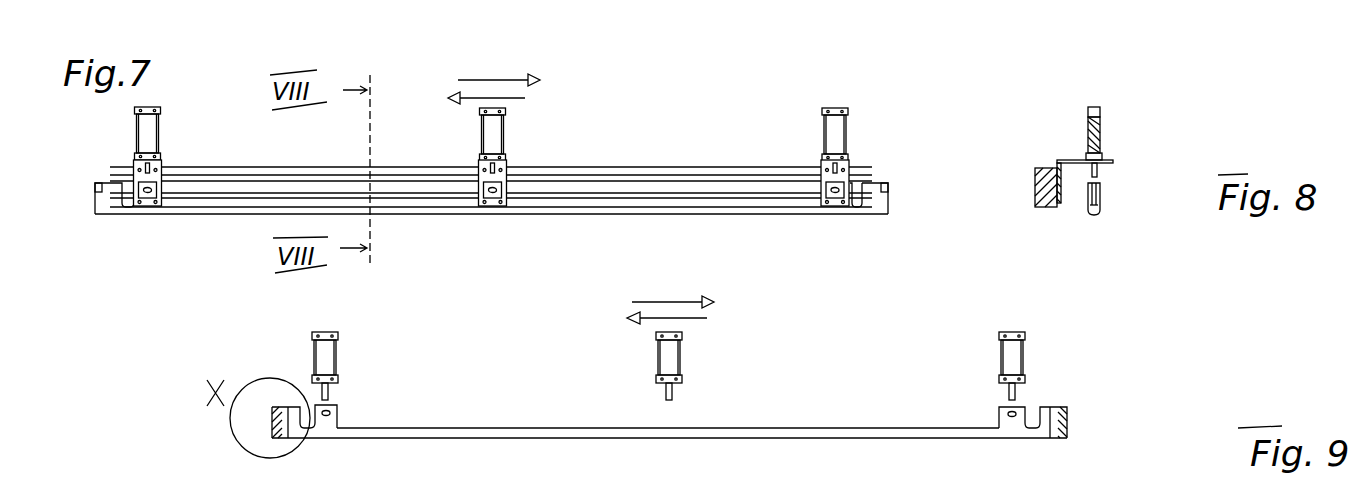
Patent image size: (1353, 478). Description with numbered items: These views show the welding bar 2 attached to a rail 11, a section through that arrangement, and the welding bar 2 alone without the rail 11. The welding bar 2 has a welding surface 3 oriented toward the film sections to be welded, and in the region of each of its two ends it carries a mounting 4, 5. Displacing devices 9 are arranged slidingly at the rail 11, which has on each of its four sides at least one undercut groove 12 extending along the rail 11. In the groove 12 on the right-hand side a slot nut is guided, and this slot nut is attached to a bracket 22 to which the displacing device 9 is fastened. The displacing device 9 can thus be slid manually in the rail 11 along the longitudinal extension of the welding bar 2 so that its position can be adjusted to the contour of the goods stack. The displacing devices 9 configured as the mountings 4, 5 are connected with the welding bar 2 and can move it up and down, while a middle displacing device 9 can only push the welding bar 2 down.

In FIG. 8, the welding bar 2 is at (1118, 204).
In FIG. 8, the welding surface 3 is at (1093, 217).
In FIG. 7, the mounting 4 is at (172, 144).
In FIG. 7, the mounting 5 is at (859, 139).
In FIG. 7, the displacing device 9 is at (160, 112).
In FIG. 8, the displacing device 9 is at (1100, 130).
In FIG. 9, the displacing device 9 is at (668, 366).
In FIG. 8, the rail 11 is at (1042, 203).
In FIG. 8, the undercut groove 12 is at (1035, 197).
In FIG. 8, the bracket 22 is at (1070, 160).